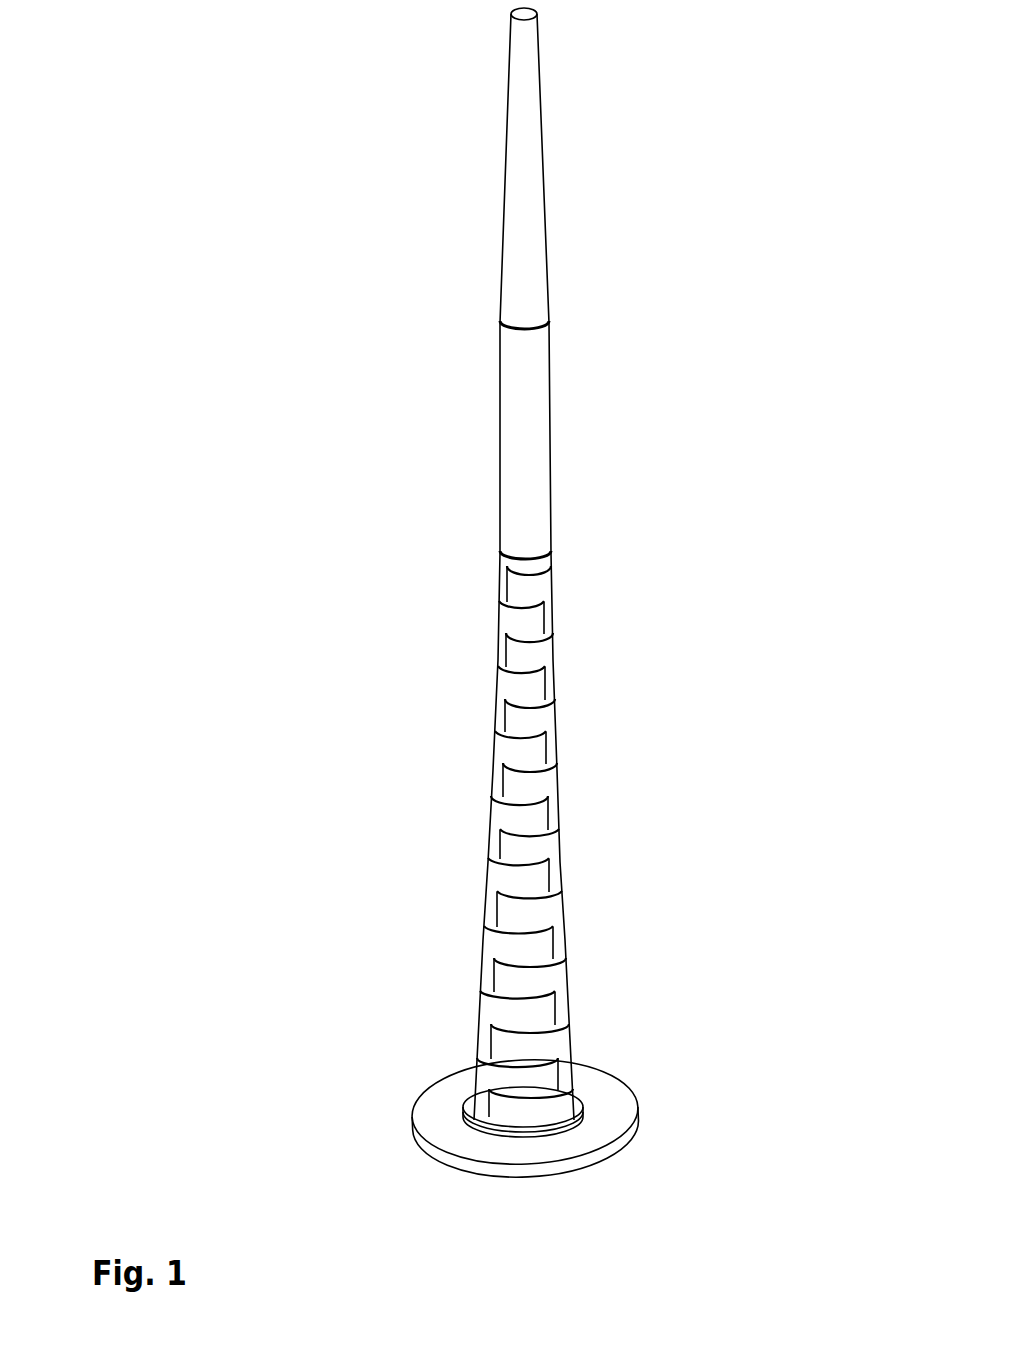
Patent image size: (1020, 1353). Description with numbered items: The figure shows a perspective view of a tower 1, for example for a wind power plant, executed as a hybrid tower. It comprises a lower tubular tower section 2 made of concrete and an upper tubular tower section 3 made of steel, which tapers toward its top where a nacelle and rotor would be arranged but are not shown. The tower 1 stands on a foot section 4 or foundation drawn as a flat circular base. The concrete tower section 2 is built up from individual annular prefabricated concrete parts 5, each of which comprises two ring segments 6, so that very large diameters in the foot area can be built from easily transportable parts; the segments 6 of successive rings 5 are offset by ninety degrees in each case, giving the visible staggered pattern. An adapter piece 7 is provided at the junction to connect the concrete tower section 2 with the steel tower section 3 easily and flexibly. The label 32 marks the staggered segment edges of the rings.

The tower 1 is at (549, 595).
The lower tubular tower section 2 is at (540, 836).
The upper tubular tower section 3 is at (508, 353).
The foot section 4 is at (440, 1127).
The annular prefabricated concrete part 5 is at (548, 915).
The ring segment 6 is at (642, 872).
The adapter piece 7 is at (513, 568).
The segment overlap edges 32 is at (552, 822).